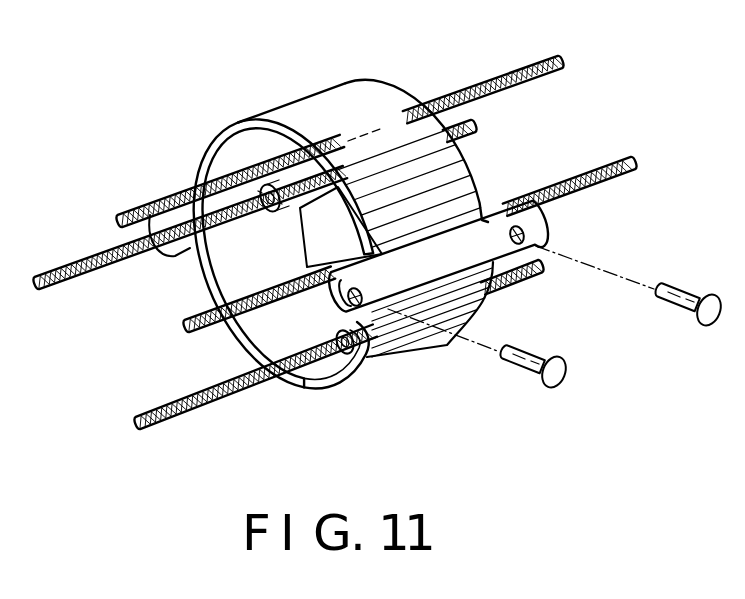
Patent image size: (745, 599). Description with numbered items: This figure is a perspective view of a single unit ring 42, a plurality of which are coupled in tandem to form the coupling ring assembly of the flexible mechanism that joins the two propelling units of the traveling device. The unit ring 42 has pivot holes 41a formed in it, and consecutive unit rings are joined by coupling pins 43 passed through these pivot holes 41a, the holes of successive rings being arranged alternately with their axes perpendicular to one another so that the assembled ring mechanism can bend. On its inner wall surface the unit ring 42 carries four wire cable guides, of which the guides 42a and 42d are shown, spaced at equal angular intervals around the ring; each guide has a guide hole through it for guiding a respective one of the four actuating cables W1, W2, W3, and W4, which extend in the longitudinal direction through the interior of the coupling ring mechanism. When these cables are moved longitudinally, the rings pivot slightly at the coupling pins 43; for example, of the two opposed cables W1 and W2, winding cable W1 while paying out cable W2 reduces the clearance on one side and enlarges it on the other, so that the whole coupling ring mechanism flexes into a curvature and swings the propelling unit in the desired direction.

The unit ring 42 is at (361, 94).
The wire cable guide 42a is at (270, 217).
The wire cable guide 42d is at (347, 386).
The pivot hole 41a is at (338, 310).
The coupling pin 43 is at (716, 328).
The actuating cable W1 is at (530, 64).
The actuating cable W2 is at (150, 408).
The actuating cable W3 is at (612, 159).
The actuating cable W4 is at (67, 264).